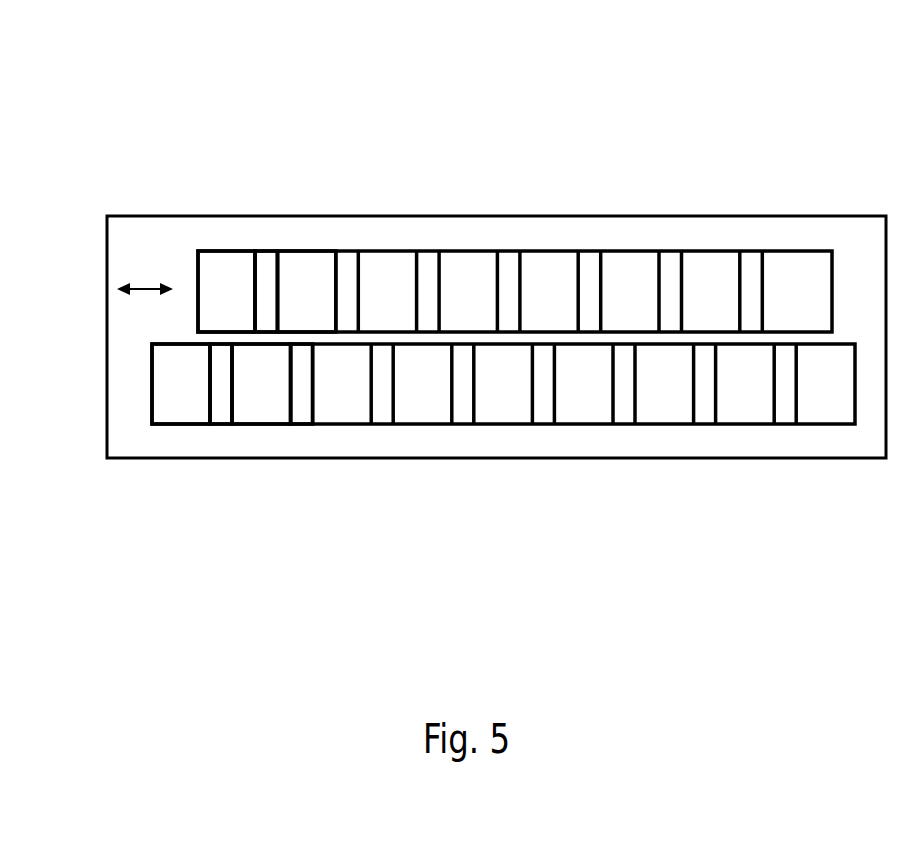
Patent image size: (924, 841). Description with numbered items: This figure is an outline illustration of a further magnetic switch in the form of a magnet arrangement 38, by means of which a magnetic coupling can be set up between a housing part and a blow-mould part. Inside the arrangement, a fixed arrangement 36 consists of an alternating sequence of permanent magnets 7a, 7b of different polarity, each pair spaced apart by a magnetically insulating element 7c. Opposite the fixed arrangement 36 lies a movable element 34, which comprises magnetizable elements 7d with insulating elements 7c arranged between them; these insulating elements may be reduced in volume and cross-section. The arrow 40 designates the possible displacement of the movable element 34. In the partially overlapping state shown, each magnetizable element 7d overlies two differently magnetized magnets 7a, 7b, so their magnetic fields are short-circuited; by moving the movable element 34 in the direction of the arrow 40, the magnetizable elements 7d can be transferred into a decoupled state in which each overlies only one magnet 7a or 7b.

The permanent magnet element 7a is at (166, 490).
The permanent magnet element 7b is at (261, 490).
The magnetically insulating element 7c is at (277, 370).
The magnetizable element 7d is at (281, 195).
The movable element 34 is at (515, 189).
The fixed arrangement 36 is at (503, 472).
The magnet arrangement 38 is at (496, 252).
The displacement of the movable element 40 is at (145, 194).